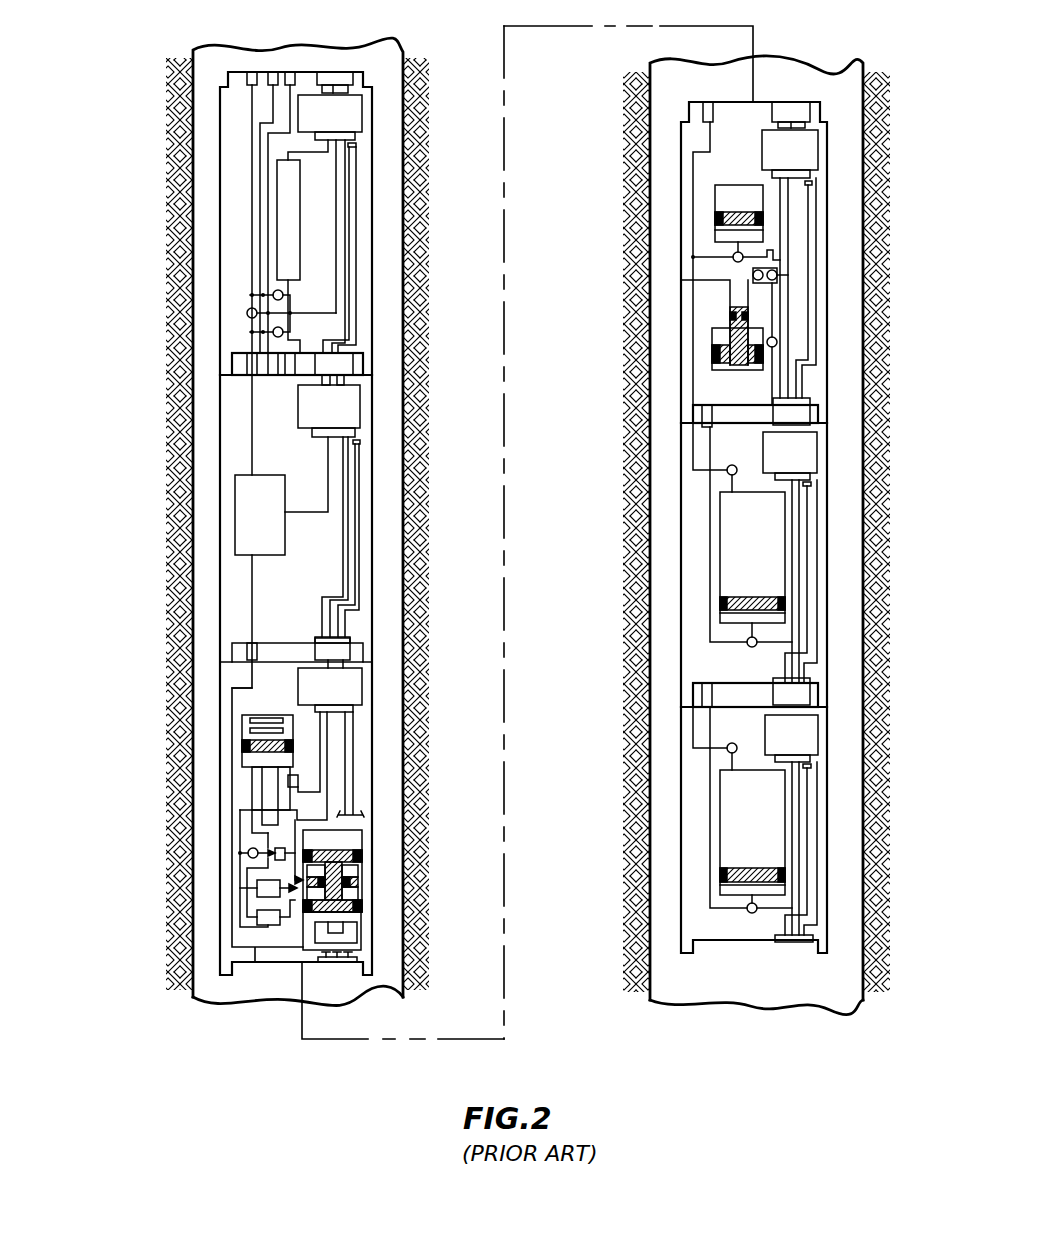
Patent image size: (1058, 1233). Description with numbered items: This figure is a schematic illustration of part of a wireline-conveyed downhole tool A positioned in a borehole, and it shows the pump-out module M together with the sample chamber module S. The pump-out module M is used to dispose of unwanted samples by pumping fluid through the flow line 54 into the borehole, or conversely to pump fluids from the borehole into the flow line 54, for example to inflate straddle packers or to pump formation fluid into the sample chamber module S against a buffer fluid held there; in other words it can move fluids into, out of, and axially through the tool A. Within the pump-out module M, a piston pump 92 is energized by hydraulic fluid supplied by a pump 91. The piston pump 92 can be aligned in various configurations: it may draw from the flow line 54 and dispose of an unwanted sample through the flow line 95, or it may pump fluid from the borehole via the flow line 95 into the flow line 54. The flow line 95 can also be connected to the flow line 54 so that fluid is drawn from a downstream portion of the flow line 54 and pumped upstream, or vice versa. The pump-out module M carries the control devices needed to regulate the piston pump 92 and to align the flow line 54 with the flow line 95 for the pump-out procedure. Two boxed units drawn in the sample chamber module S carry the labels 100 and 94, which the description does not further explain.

The downhole tool A is at (905, 62).
The pump-out module M is at (211, 675).
The sample chamber module S is at (842, 578).
The flow line 54 is at (222, 795).
The pump 91 is at (242, 760).
The piston pump 92 is at (350, 840).
The flow line 95 is at (390, 947).
The electronics / control unit 100 is at (790, 456).
The electronics / control unit 94 is at (791, 738).